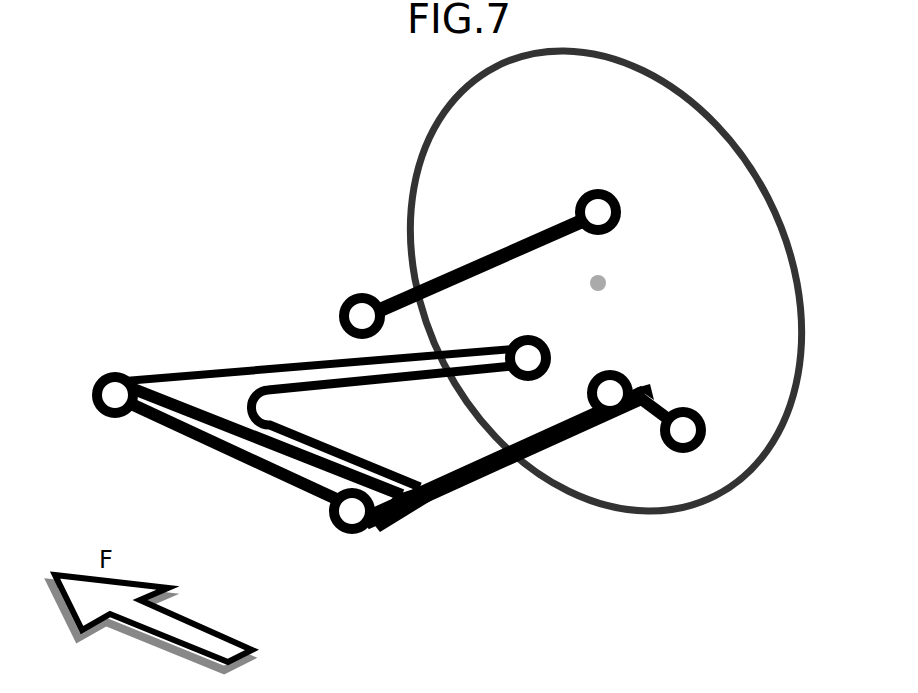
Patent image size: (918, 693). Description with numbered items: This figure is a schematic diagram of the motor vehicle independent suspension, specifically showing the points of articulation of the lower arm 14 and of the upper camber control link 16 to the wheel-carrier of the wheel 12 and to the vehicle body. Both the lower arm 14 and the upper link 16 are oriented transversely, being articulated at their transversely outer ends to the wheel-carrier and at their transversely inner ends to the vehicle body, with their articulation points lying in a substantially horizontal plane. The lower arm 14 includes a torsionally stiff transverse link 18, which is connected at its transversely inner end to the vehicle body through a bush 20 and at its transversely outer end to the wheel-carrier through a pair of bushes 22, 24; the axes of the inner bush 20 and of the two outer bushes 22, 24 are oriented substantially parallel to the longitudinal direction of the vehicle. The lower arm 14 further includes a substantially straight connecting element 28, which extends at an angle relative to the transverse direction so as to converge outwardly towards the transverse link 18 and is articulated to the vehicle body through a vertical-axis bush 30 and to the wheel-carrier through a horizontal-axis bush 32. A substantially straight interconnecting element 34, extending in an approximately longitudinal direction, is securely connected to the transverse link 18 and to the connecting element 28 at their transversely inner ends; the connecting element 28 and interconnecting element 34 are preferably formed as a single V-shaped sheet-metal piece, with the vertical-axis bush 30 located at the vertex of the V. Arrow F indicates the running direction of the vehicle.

The wheel 12 is at (712, 122).
The lower arm 14 is at (381, 426).
The upper camber control link 16 is at (488, 250).
The transverse link 18 is at (495, 477).
The bush 20 is at (340, 534).
The bush 22 is at (707, 431).
The bush 24 is at (622, 373).
The connecting element 28 is at (258, 386).
The vertical-axis bush 30 is at (113, 375).
The horizontal-axis bush 32 is at (542, 338).
The interconnecting element 34 is at (200, 432).